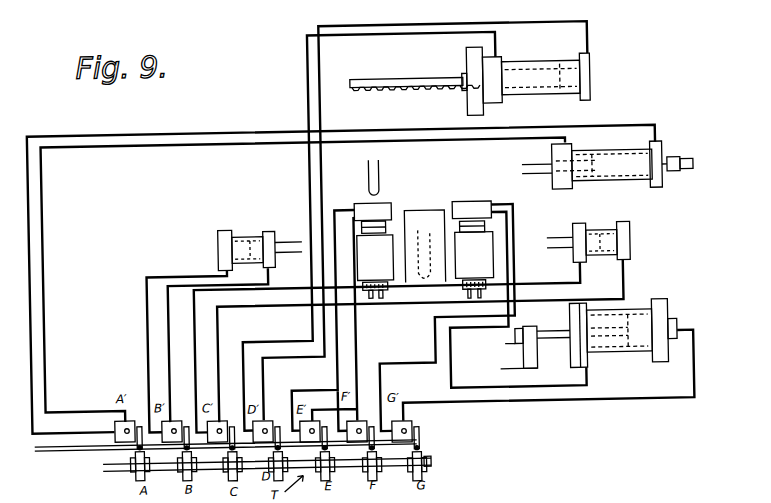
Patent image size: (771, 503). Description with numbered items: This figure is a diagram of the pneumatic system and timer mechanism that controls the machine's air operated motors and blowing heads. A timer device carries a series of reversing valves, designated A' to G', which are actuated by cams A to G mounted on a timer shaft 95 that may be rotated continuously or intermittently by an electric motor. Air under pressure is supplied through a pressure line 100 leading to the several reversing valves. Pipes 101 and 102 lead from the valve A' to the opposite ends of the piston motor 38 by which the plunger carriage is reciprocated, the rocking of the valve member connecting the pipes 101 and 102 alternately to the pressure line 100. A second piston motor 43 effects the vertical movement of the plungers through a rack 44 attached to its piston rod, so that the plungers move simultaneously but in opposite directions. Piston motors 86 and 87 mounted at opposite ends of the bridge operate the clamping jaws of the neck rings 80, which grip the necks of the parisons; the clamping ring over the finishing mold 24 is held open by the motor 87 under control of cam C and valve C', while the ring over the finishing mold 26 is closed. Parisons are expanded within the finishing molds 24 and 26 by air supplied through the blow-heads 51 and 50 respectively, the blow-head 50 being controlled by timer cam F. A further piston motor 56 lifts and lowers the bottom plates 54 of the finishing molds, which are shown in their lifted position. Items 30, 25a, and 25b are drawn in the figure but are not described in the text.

The finishing mold 24 is at (490, 263).
The pipe 25a is at (417, 276).
The pipe housing 25b is at (433, 215).
The finishing mold 26 is at (362, 258).
The pipe 30 is at (378, 187).
The air operated piston motor 38 is at (607, 153).
The air operated piston motor 43 is at (540, 65).
The rack 44 is at (427, 82).
The blow-head 50 is at (382, 213).
The blow-head 51 is at (477, 210).
The bottom plates 54 is at (377, 297).
The air operated piston motor 56 is at (640, 307).
The neck ring 80 is at (422, 211).
The air operated piston motor 86 is at (248, 243).
The air operated piston motor 87 is at (607, 230).
The timer shaft 95 is at (116, 466).
The pressure line 100 is at (65, 444).
The pipe 101 is at (31, 339).
The pipe 102 is at (44, 304).